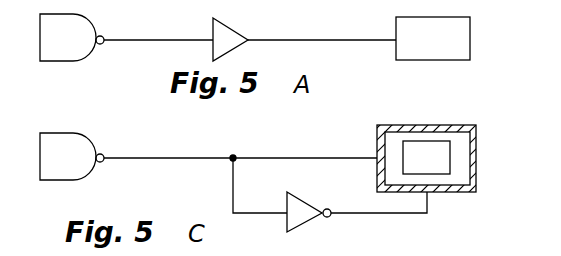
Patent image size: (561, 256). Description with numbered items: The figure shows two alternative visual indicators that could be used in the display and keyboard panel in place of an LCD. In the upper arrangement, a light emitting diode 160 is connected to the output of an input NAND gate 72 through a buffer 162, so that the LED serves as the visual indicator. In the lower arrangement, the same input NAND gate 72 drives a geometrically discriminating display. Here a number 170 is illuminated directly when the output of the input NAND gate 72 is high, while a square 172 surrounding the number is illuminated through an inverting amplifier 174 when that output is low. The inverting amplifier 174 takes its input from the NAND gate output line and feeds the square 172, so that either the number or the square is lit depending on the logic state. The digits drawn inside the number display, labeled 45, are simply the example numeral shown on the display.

In FIG. 5A, the input NAND gate 72 is at (72, 37).
In FIG. 5C, the input NAND gate 72 is at (72, 156).
In FIG. 5A, the buffer 162 is at (214, 30).
In FIG. 5A, the light emitting diode 160 is at (396, 30).
In FIG. 5C, the inverting amplifier 174 is at (298, 196).
In FIG. 5C, the number 170 is at (465, 157).
In FIG. 5C, the square 172 is at (456, 193).
In FIG. 5C, the numeric display 45 is at (426, 157).